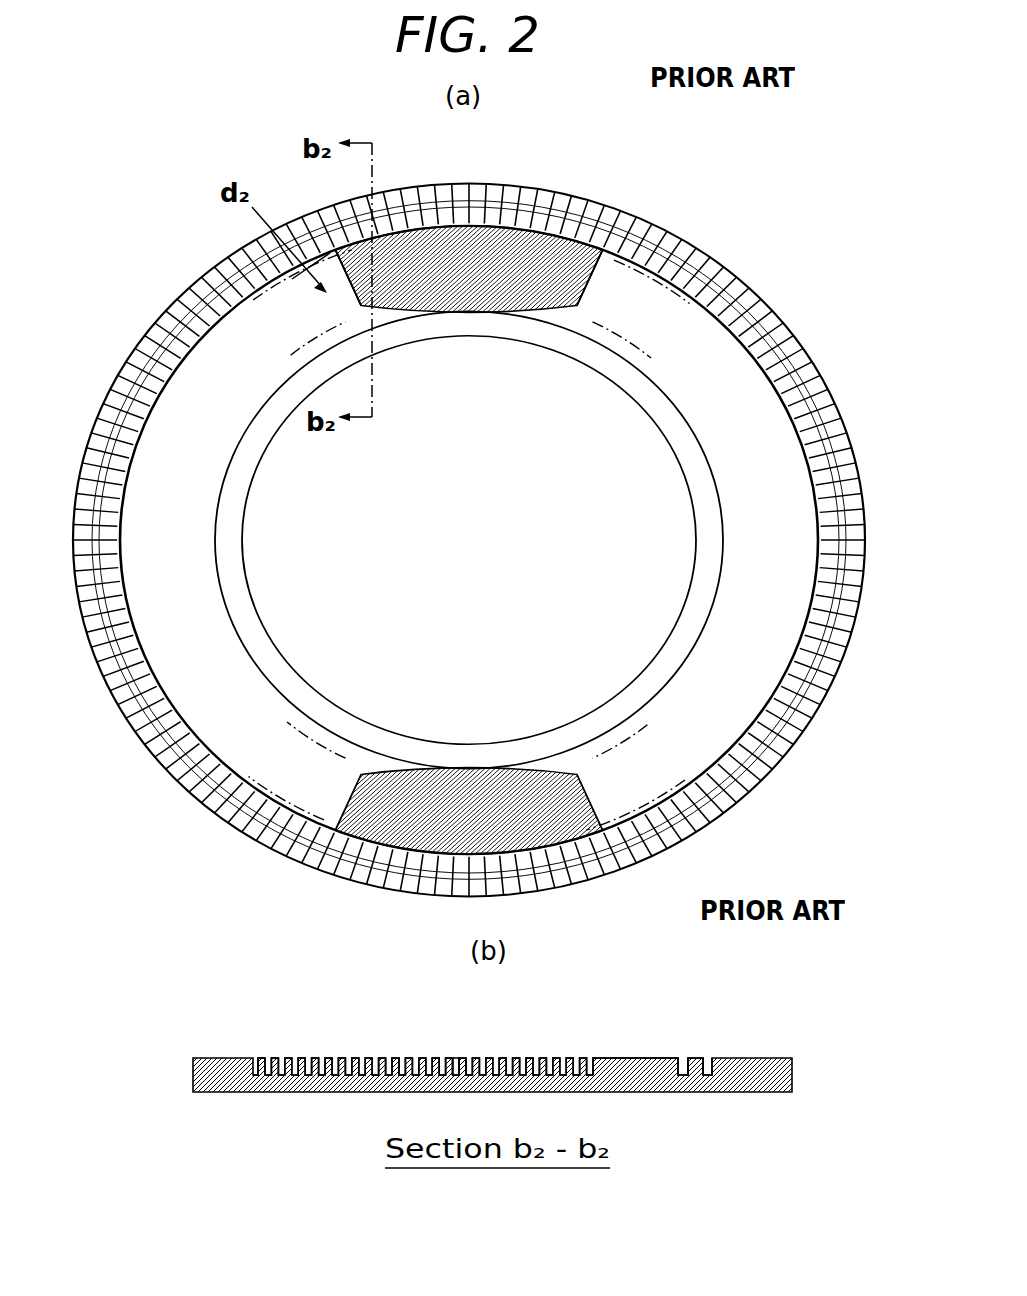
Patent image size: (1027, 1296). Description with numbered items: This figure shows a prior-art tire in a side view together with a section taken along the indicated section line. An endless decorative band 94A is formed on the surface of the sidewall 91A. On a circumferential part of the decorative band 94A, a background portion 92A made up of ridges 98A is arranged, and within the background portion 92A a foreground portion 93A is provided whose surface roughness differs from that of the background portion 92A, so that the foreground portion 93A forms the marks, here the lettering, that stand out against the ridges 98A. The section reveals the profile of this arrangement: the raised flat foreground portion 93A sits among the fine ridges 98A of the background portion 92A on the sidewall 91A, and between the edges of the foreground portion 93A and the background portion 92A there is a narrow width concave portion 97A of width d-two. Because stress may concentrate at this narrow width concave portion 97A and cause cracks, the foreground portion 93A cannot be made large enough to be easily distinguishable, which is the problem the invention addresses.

The sidewall 91A is at (672, 252).
The background portion 92A is at (420, 247).
The foreground portion 93A is at (448, 240).
The decorative band 94A is at (620, 290).
The narrow width concave portion 97A is at (393, 243).
The ridges 98A is at (532, 232).